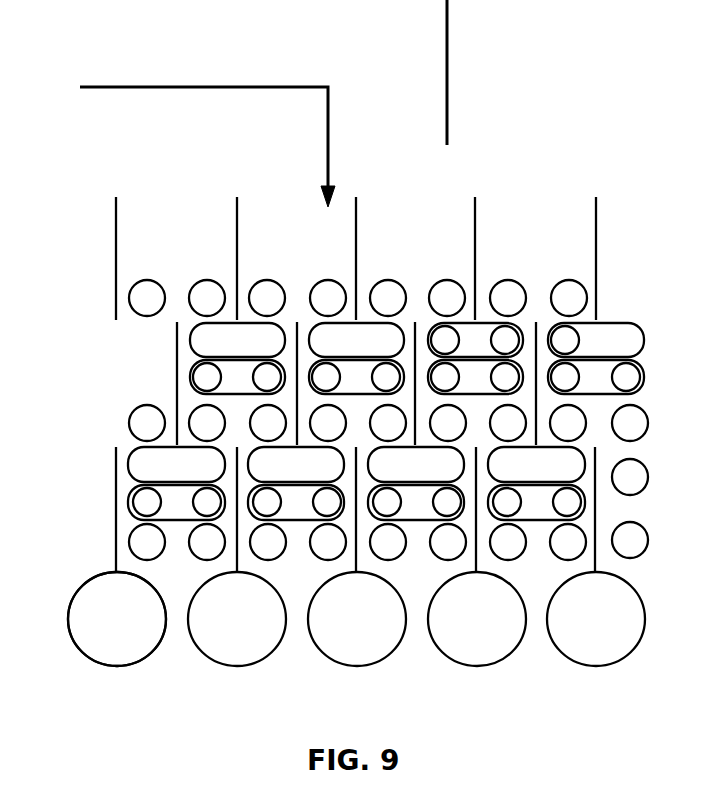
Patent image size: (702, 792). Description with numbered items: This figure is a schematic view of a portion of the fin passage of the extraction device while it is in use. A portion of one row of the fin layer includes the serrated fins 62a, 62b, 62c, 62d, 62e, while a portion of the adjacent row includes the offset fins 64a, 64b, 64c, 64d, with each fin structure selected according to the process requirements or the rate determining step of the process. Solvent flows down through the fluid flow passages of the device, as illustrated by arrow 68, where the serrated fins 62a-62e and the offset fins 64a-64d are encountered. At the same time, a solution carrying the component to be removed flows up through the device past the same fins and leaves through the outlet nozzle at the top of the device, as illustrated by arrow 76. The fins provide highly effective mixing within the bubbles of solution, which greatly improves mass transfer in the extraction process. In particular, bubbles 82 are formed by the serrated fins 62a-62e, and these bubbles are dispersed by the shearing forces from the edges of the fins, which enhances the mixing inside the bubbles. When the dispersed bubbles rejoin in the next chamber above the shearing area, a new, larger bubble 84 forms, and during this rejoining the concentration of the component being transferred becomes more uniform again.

The arrow 68 is at (206, 86).
The arrow 76 is at (446, 53).
The offset fin 64a is at (177, 374).
The offset fin 64b is at (290, 324).
The offset fin 64c is at (409, 324).
The offset fin 64d is at (530, 324).
The larger bubble 84 is at (132, 448).
The serrated fin 62a is at (114, 560).
The serrated fin 62b is at (235, 560).
The serrated fin 62c is at (354, 557).
The serrated fin 62d is at (473, 557).
The serrated fin 62e is at (592, 557).
The bubble 82 is at (115, 665).